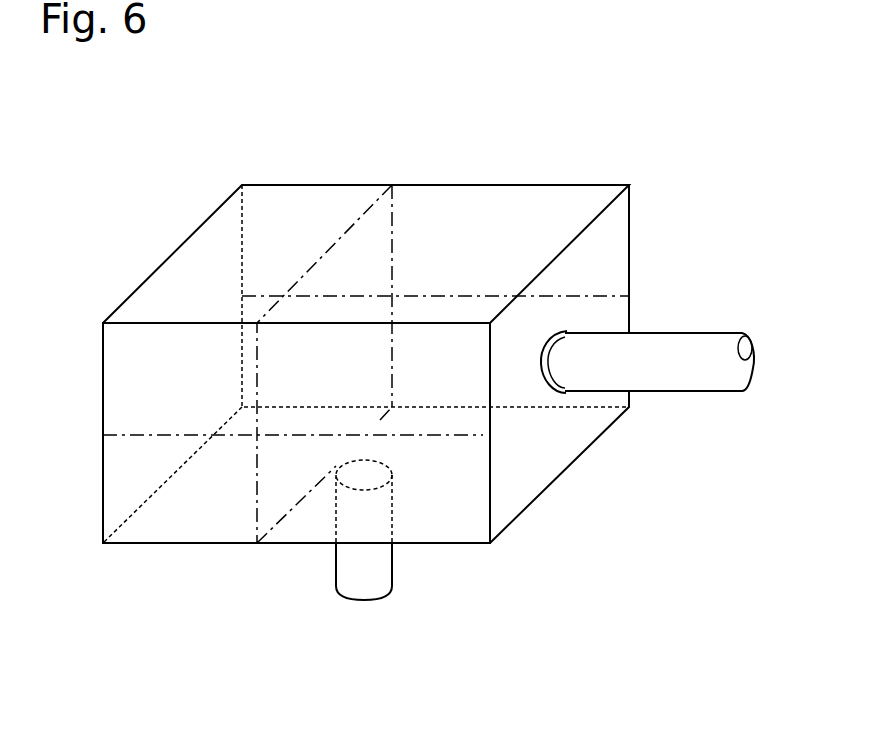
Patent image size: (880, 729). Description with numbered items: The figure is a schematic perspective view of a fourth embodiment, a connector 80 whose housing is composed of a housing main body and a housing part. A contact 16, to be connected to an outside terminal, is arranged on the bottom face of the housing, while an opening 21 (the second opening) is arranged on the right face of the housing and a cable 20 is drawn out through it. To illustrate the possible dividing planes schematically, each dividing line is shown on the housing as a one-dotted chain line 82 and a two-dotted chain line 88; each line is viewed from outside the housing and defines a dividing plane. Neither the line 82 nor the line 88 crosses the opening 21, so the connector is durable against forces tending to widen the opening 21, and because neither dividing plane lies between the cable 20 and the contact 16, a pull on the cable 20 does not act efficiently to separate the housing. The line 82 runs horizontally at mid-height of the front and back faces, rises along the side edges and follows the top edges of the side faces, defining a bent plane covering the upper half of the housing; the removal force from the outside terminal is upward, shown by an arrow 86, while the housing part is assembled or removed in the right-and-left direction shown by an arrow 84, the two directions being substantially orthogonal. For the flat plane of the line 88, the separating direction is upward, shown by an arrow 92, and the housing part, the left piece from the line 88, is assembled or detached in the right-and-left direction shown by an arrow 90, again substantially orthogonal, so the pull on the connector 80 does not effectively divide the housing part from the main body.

The contact 16 is at (375, 583).
The cable 20 is at (695, 347).
The opening 21 is at (558, 410).
The connector 80 is at (644, 140).
The one-dotted chain line 82 is at (122, 436).
The arrow 84 is at (520, 175).
The arrow 86 is at (551, 126).
The two-dotted chain line 88 is at (352, 226).
The arrow 90 is at (188, 622).
The arrow 92 is at (222, 571).